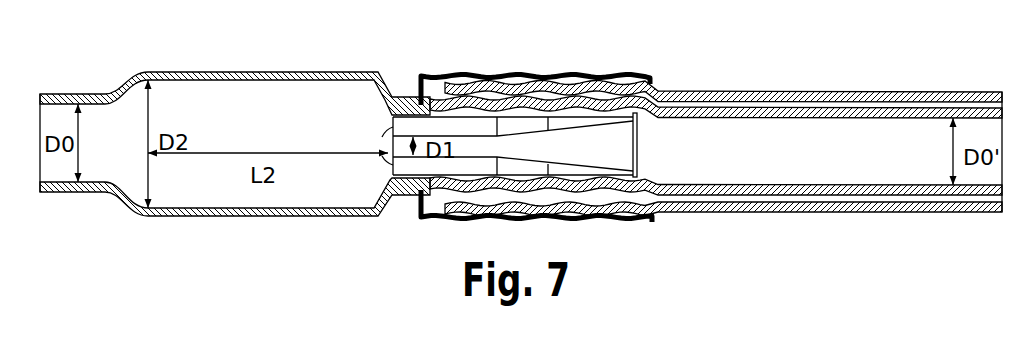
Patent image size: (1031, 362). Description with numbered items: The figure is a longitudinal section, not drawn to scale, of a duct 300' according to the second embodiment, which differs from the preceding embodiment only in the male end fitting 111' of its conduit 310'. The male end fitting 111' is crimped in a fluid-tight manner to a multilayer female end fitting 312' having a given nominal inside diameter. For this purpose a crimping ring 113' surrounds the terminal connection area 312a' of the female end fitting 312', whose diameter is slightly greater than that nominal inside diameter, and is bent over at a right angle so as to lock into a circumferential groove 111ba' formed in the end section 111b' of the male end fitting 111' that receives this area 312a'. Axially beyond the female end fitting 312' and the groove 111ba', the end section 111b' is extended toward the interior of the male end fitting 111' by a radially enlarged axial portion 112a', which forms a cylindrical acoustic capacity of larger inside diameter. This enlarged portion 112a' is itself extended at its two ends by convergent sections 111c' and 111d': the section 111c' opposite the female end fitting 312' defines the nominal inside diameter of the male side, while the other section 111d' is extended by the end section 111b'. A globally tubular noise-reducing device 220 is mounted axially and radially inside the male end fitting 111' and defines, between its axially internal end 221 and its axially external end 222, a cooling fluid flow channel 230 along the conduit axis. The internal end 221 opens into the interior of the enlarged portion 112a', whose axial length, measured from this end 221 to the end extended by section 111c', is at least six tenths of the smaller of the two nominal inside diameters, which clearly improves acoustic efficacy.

The duct 300' is at (521, 155).
The conduit 310' is at (251, 137).
The male end fitting 111' is at (251, 131).
The convergent section 111c' is at (108, 125).
The radially enlarged axial portion 112a' is at (263, 42).
The circumferential groove 111ba' is at (385, 70).
The end section 111b' is at (418, 220).
The convergent section 111d' is at (274, 235).
The crimping ring 113' is at (536, 125).
The noise-reducing device 220 is at (509, 146).
The axially internal end 221 is at (388, 128).
The axially external end 222 is at (637, 118).
The cooling fluid flow channel 230 is at (568, 160).
The female end fitting 312' is at (716, 156).
The terminal connection area 312a' is at (723, 177).